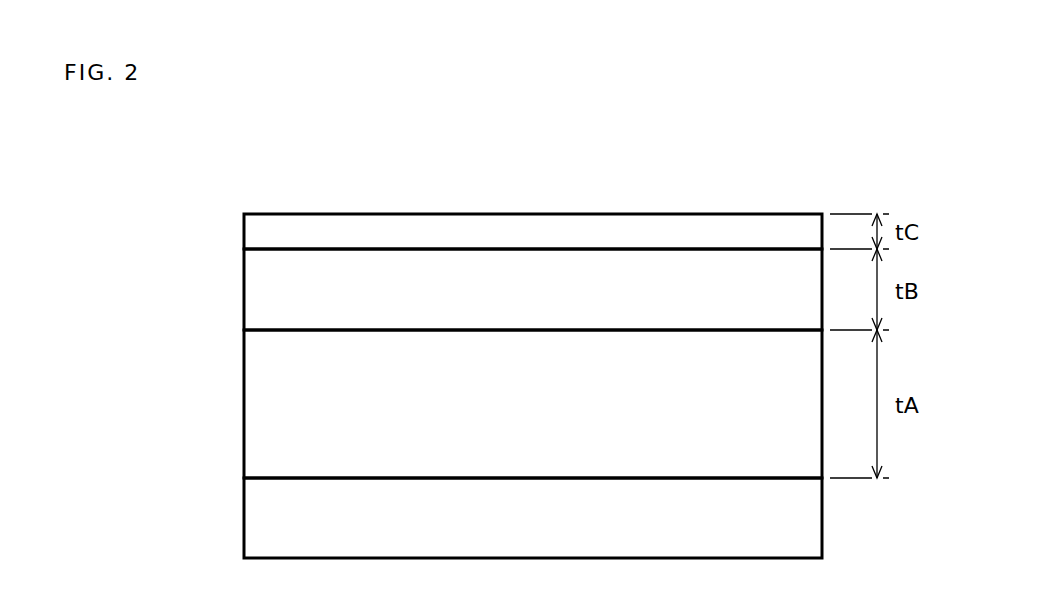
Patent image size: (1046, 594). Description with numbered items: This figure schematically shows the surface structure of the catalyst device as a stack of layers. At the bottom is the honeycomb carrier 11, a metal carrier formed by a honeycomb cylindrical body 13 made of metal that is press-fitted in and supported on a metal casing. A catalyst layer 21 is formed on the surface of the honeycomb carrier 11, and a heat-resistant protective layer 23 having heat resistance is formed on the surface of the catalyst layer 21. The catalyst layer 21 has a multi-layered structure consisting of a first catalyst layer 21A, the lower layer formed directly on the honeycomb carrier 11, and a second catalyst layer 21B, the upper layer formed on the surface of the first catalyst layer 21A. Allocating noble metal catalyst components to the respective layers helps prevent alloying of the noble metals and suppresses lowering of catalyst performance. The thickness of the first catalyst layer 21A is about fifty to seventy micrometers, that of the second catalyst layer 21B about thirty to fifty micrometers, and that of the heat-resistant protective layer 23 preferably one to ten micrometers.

The heat-resistant protective layer 23 is at (244, 226).
The catalyst layer 21 is at (463, 363).
The second catalyst layer 21B is at (244, 286).
The first catalyst layer 21A is at (488, 404).
The honeycomb cylindrical body 13 is at (459, 518).
The honeycomb carrier 11 is at (244, 520).